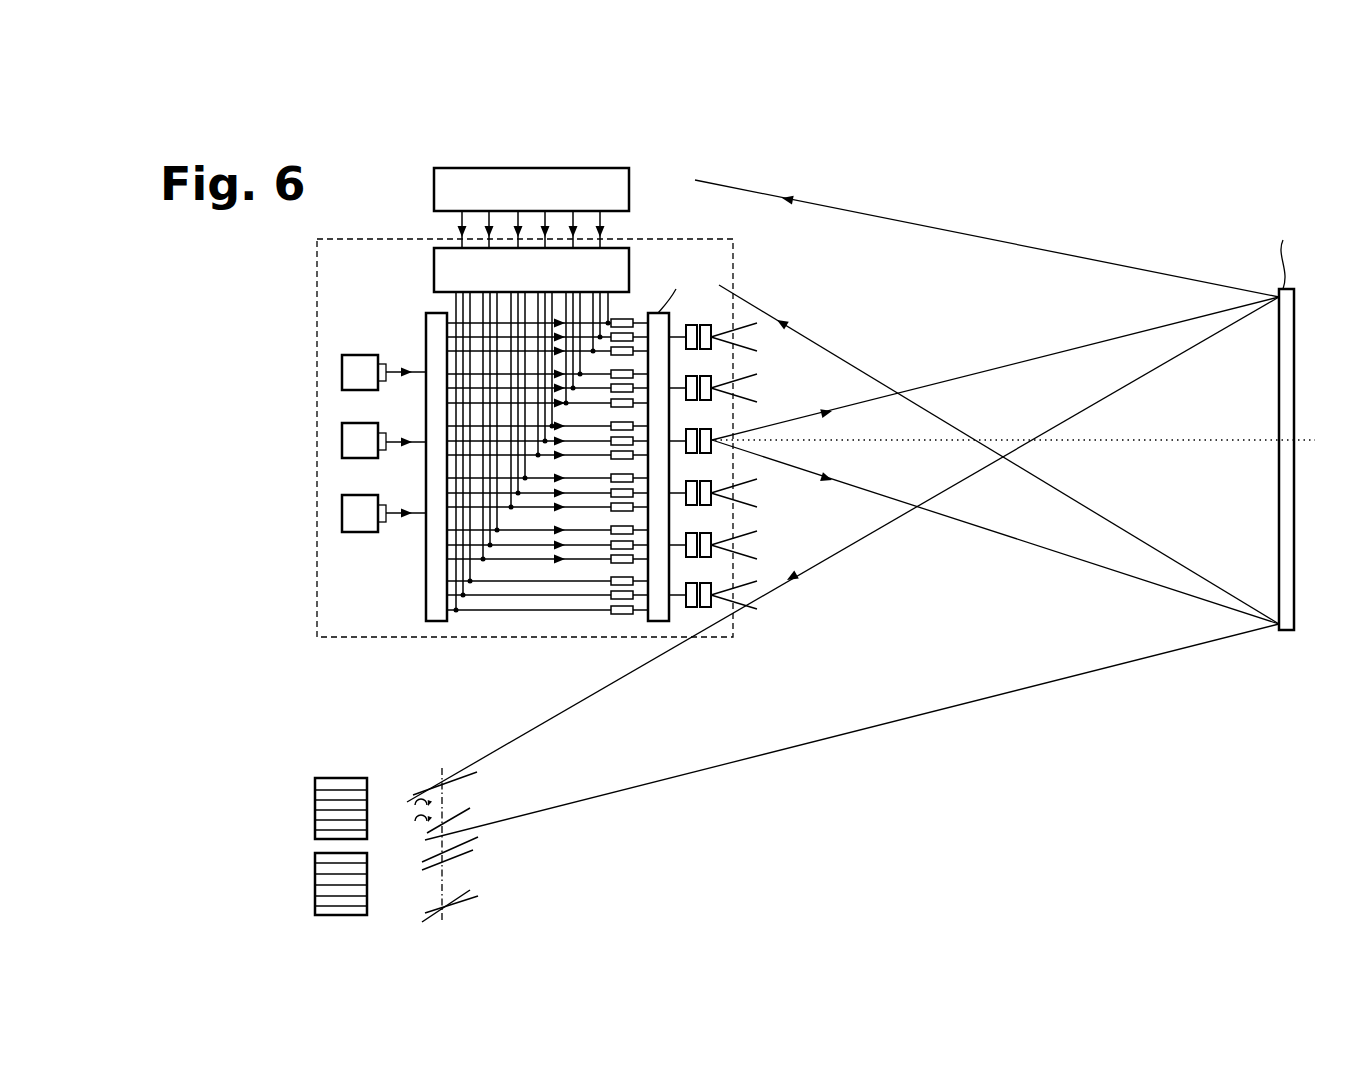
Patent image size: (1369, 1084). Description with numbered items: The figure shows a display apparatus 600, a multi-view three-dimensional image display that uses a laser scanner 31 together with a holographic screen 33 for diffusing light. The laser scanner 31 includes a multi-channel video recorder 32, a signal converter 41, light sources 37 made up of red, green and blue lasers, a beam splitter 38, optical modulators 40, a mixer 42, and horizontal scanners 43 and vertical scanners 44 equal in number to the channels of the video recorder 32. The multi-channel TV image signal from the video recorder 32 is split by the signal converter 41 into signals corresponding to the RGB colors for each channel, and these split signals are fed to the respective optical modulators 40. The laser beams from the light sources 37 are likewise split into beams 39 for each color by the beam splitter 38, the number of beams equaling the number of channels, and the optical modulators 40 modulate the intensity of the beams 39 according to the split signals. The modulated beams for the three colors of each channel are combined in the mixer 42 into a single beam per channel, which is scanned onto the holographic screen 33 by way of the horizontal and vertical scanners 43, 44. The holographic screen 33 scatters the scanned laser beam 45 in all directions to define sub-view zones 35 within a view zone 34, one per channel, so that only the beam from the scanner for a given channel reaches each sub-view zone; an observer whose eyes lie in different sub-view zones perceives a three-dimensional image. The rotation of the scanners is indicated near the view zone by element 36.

The display apparatus 600 is at (1014, 224).
The laser scanner 31 is at (330, 637).
The multi-channel video recorder 32 is at (433, 177).
The holographic screen 33 is at (1284, 632).
The view zone 34 is at (468, 792).
The sub-view zones 35 is at (315, 778).
The rotation of scanning mirrors 36 is at (410, 800).
The light sources 37 is at (342, 377).
The beam splitter 38 is at (440, 622).
The beams 39 is at (473, 322).
The optical modulators 40 is at (611, 582).
The signal converter 41 is at (433, 260).
The mixer 42 is at (655, 622).
The horizontal scanners 43 is at (692, 608).
The vertical scanners 44 is at (713, 608).
The laser beam 45 is at (857, 491).